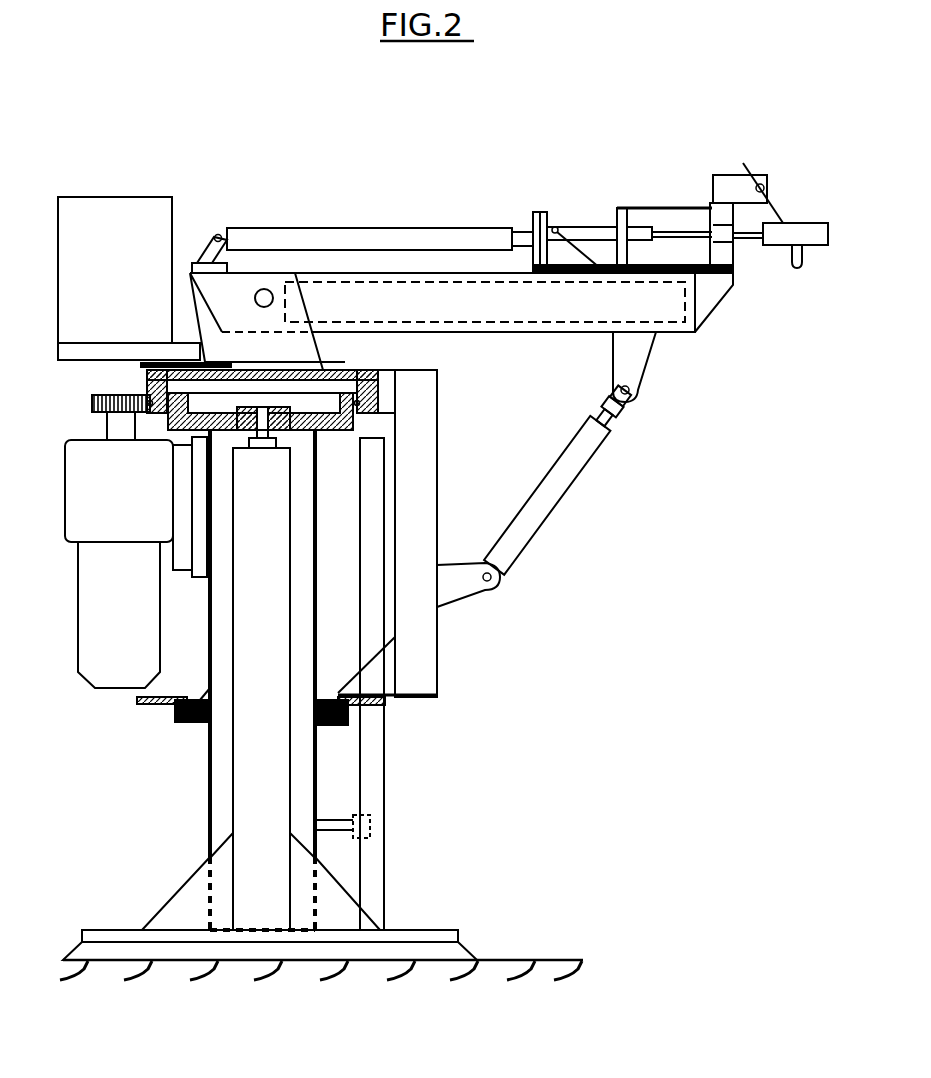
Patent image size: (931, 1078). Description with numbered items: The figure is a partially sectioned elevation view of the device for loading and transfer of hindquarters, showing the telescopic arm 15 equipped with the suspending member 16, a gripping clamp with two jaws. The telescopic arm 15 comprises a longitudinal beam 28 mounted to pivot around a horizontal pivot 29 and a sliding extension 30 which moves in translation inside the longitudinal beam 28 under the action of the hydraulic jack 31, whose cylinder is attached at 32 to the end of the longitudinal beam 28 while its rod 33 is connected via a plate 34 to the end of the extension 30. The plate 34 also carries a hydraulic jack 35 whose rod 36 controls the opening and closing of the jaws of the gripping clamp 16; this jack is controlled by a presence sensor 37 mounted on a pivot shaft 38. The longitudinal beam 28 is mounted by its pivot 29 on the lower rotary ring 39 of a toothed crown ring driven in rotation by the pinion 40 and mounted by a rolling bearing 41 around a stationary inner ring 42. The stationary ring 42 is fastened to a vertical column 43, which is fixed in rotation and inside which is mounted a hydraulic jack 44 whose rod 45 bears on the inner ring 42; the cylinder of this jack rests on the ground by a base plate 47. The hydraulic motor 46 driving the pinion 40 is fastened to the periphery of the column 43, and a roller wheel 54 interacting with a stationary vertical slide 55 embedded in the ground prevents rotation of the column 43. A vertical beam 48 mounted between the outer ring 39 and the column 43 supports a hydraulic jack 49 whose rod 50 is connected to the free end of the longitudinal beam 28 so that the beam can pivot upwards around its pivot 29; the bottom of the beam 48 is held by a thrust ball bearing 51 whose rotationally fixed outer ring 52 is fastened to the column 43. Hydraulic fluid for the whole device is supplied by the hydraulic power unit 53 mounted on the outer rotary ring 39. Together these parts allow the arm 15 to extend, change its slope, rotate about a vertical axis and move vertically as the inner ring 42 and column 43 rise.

The telescopic arm 15 is at (522, 305).
The suspending member 16 is at (817, 252).
The longitudinal beam 28 is at (671, 334).
The horizontal pivot 29 is at (266, 287).
The sliding extension 30 is at (703, 300).
The hydraulic jack 31 is at (377, 240).
The cylinder attachment point 32 is at (218, 232).
The rod 33 is at (513, 232).
The plate 34 is at (600, 265).
The hydraulic jack 35 is at (606, 230).
The rod 36 is at (678, 233).
The presence sensor 37 is at (782, 221).
The pivot shaft 38 is at (761, 184).
The lower rotary ring 39 is at (362, 385).
The pinion 40 is at (92, 404).
The rolling bearing 41 is at (380, 400).
The stationary inner ring 42 is at (347, 430).
The vertical column 43 is at (313, 593).
The hydraulic jack 44 is at (250, 769).
The rod 45 is at (253, 440).
The hydraulic motor 46 is at (119, 525).
The base plate 47 is at (156, 913).
The vertical beam 48 is at (410, 496).
The hydraulic jack 49 is at (556, 496).
The rod 50 is at (612, 425).
The thrust ball bearing 51 is at (176, 718).
The outer ring 52 is at (334, 725).
The hydraulic power unit 53 is at (130, 225).
The roller wheel 54 is at (370, 827).
The stationary vertical slide 55 is at (368, 782).